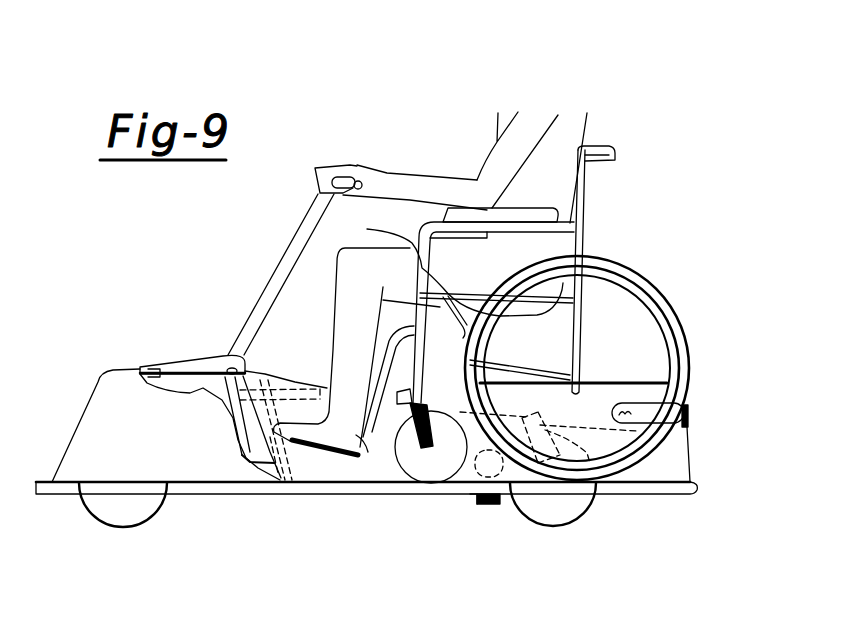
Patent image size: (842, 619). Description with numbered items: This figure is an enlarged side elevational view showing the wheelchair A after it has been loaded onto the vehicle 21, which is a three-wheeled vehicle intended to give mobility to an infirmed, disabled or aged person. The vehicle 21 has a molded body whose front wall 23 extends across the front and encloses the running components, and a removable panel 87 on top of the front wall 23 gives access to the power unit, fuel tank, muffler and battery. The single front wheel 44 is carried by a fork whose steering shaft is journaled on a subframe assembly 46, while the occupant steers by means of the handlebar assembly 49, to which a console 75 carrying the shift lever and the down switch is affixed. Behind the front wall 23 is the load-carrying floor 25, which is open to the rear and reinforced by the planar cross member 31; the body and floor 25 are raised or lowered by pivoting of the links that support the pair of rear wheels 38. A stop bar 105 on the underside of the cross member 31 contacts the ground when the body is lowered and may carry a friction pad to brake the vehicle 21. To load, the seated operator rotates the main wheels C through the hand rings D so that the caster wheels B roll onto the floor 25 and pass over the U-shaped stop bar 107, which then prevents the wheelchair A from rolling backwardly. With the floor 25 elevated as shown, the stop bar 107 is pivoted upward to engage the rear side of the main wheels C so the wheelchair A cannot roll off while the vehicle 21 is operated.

The vehicle 21 is at (648, 496).
The front wall 23 is at (116, 369).
The floor 25 is at (353, 473).
The cross member 31 is at (477, 497).
The rear wheels 38 is at (532, 521).
The front wheel 44 is at (97, 518).
The subframe assembly 46 is at (301, 230).
The handlebar assembly 49 is at (366, 174).
The console 75 is at (323, 164).
The removable panel 87 is at (203, 362).
The stop bar 105 is at (483, 496).
The stop bar 107 is at (688, 416).
The wheelchair A is at (607, 191).
The caster wheels B is at (403, 495).
The main wheels C is at (654, 300).
The hand rings D is at (627, 282).